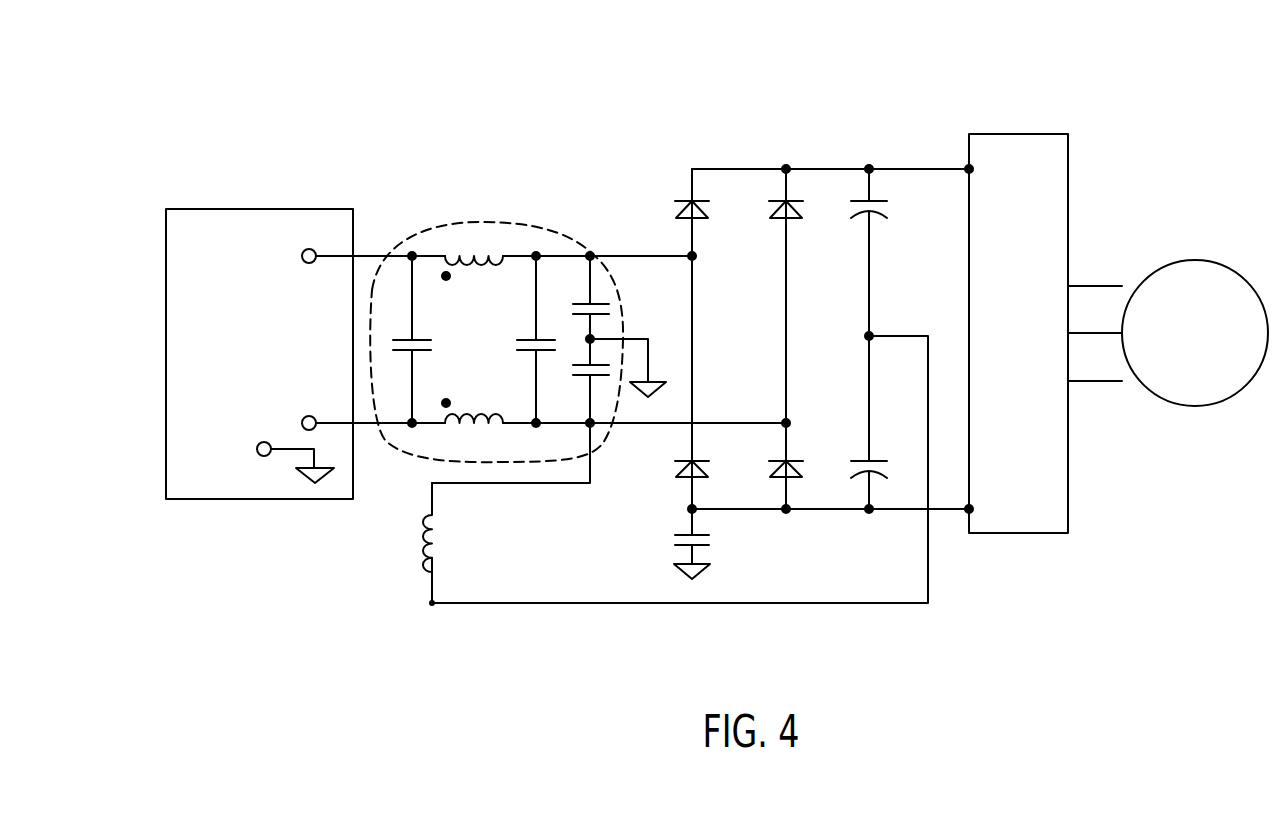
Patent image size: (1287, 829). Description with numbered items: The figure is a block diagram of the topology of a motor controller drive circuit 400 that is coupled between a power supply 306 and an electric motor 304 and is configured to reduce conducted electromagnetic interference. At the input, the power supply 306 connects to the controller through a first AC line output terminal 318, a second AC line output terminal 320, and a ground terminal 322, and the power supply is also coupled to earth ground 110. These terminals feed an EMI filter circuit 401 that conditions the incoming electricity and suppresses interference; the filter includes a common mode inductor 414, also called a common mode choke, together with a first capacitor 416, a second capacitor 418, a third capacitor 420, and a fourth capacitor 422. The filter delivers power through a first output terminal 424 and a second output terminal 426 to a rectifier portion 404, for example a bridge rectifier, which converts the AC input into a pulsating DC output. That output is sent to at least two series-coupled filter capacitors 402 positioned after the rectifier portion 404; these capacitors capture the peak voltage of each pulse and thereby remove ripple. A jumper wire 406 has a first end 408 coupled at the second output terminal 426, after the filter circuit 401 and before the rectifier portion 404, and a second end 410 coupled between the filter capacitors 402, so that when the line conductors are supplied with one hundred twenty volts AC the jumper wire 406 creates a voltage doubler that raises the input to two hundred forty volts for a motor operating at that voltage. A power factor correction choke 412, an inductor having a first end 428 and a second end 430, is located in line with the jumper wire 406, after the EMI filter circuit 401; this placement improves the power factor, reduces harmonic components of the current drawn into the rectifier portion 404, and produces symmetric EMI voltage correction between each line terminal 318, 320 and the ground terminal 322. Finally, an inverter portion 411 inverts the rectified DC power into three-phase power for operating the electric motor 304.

The drive circuit 400 is at (413, 88).
The power supply 306 is at (246, 209).
The first AC line output terminal 318 is at (308, 249).
The second AC line output terminal 320 is at (308, 416).
The ground terminal 322 is at (305, 485).
The EMI filter circuit 401 is at (441, 222).
The common mode inductor 414 is at (486, 254).
The first capacitor 416 is at (400, 337).
The second capacitor 418 is at (524, 337).
The third capacitor 420 is at (605, 302).
The fourth capacitor 422 is at (578, 377).
The first output terminal 424 is at (590, 254).
The second output terminal 426 is at (598, 421).
The first end 408 is at (608, 442).
The first end 428 is at (431, 484).
The PFC choke 412 is at (428, 549).
The second end 430 is at (433, 607).
The jumper wire 406 is at (508, 605).
The rectifier portion 404 is at (741, 157).
The filter capacitors 402 is at (881, 200).
The second end 410 is at (877, 331).
The earth ground 110 is at (684, 582).
The inverter portion 411 is at (994, 344).
The electric motor 304 is at (1169, 344).